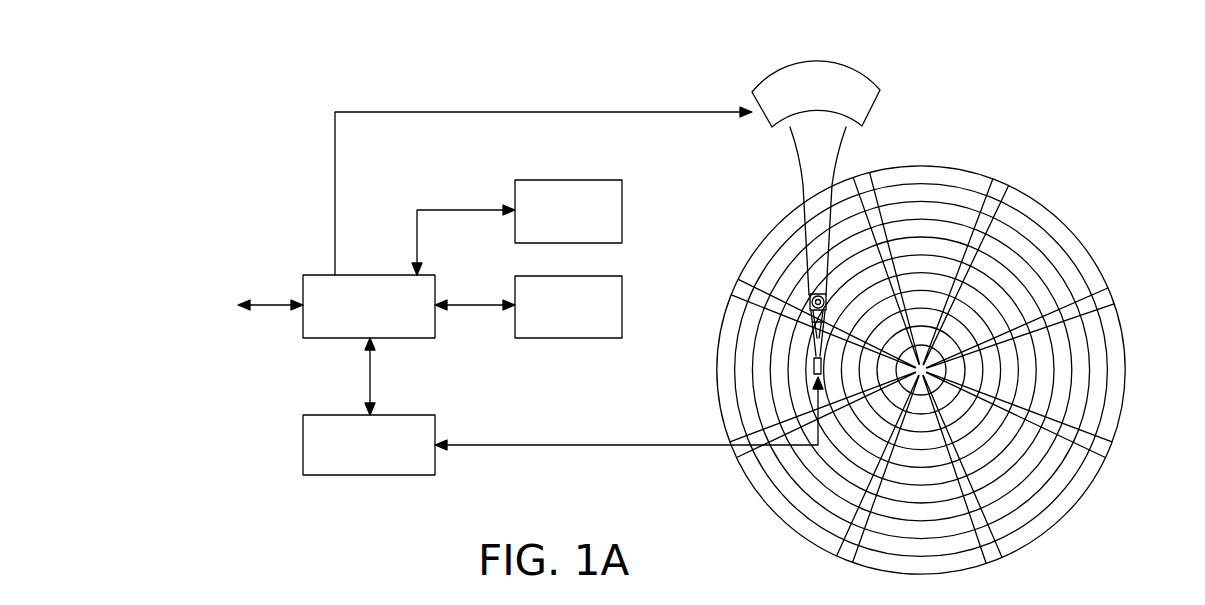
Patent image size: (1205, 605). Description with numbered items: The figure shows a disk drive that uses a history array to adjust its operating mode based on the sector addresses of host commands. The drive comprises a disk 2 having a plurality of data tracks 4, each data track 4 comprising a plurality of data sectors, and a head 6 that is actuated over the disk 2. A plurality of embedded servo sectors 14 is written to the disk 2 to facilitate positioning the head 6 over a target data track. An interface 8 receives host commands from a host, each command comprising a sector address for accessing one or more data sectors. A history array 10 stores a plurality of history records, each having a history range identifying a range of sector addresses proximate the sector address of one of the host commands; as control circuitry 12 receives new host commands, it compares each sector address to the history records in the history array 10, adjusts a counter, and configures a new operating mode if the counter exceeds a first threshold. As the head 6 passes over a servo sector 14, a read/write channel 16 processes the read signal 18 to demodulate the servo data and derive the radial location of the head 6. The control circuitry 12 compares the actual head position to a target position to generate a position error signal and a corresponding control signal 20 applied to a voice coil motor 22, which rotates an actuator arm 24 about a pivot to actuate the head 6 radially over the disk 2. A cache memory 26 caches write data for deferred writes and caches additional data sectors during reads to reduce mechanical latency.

The disk 2 is at (1062, 211).
The data tracks 4 is at (918, 192).
The head 6 is at (811, 366).
The interface 8 is at (270, 307).
The history array 10 is at (622, 308).
The control circuitry 12 is at (370, 275).
The servo sectors 14 is at (860, 182).
The read/write channel 16 is at (303, 441).
The read signal 18 is at (572, 447).
The control signal 20 is at (527, 113).
The voice coil motor 22 is at (766, 124).
The actuator arm 24 is at (802, 194).
The cache memory 26 is at (622, 212).